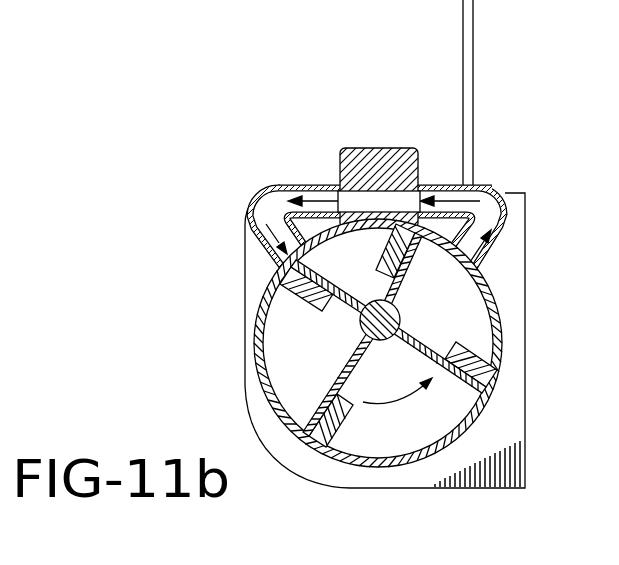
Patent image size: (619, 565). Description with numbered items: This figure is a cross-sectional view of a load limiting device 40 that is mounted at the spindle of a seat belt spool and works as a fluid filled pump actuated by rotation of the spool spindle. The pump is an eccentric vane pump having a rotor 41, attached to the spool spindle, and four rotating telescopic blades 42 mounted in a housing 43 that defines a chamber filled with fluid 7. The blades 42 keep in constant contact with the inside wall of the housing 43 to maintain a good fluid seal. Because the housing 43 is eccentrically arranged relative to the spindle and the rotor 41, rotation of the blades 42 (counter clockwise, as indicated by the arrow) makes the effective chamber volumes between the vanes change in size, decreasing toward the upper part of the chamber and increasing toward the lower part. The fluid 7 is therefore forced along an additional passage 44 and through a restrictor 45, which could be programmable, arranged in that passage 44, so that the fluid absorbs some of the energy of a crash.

The fluid 7 is at (372, 420).
The load limiting device 40 is at (214, 212).
The rotor 41 is at (363, 328).
The rotating telescopic blades 42 is at (312, 405).
The housing 43 is at (258, 308).
The additional passage 44 is at (273, 203).
The restrictor 45 is at (381, 164).